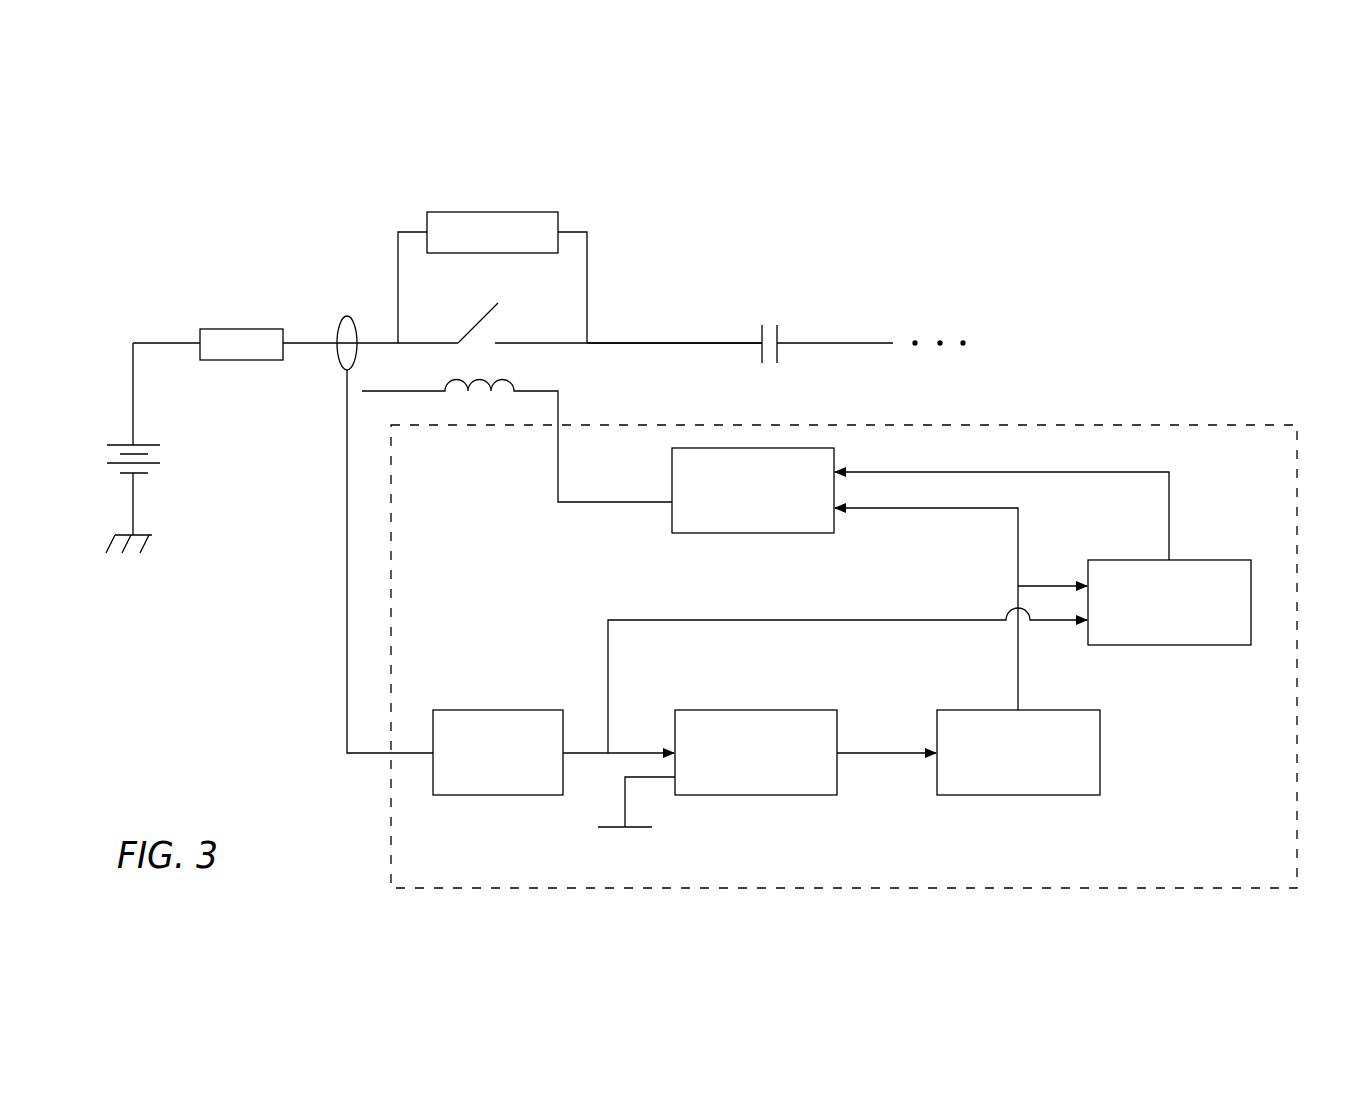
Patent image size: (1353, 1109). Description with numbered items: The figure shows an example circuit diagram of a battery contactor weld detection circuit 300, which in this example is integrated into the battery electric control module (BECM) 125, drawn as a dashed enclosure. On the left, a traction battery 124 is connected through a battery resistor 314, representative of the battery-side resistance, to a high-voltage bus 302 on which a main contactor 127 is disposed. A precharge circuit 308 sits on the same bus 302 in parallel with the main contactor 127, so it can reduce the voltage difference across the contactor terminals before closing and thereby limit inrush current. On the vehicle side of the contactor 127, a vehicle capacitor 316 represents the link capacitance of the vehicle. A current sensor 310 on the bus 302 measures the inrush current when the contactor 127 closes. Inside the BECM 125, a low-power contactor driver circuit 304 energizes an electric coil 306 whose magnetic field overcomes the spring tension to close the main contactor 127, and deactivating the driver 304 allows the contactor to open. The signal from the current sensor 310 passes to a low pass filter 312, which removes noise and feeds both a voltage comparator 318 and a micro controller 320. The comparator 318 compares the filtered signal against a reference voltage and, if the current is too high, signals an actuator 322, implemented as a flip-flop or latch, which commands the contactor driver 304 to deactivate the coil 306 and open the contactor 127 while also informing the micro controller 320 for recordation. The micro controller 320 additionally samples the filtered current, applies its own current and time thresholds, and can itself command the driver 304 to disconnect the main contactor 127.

The battery contactor weld detection circuit 300 is at (190, 790).
The precharge circuit 308 is at (447, 210).
The current sensor 310 is at (346, 318).
The main contactor 127 is at (485, 292).
The high-voltage bus 302 is at (648, 342).
The electric coil 306 is at (518, 380).
The vehicle capacitor 316 is at (782, 357).
The battery resistor 314 is at (252, 361).
The traction battery 124 is at (163, 457).
The battery electric control module 125 is at (1273, 872).
The contactor driver circuit 304 is at (702, 535).
The micro controller 320 is at (1228, 558).
The low pass filter 312 is at (455, 708).
The voltage comparator 318 is at (692, 708).
The actuator 322 is at (962, 708).